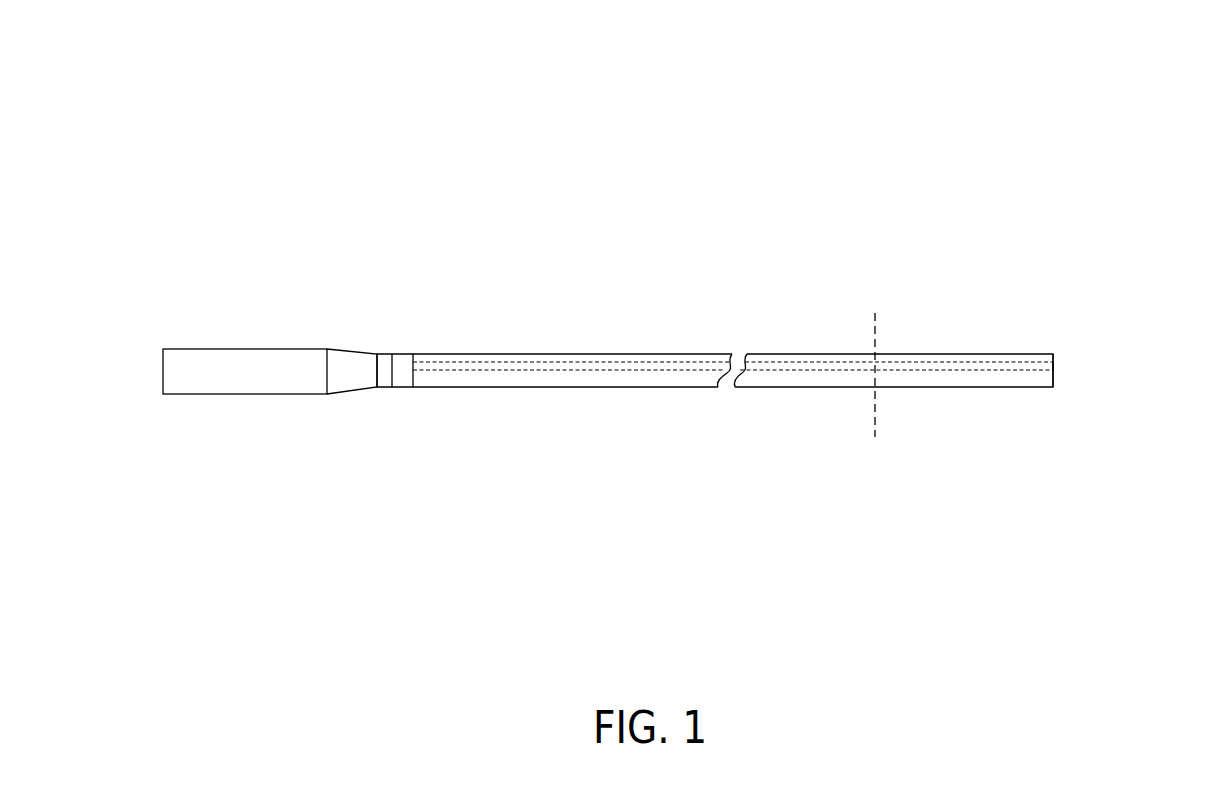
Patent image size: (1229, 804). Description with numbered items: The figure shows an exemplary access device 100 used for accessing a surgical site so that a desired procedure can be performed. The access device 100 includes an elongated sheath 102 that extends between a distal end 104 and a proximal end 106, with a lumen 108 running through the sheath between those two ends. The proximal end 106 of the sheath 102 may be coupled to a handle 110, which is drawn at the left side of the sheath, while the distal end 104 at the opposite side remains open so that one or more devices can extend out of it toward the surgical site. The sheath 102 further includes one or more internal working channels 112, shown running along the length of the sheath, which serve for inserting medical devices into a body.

The access device 100 is at (1009, 130).
The sheath 102 is at (623, 331).
The distal end 104 is at (1052, 390).
The proximal end 106 is at (413, 388).
The lumen 108 is at (1061, 378).
The handle 110 is at (247, 347).
The internal working channel 112 is at (943, 367).